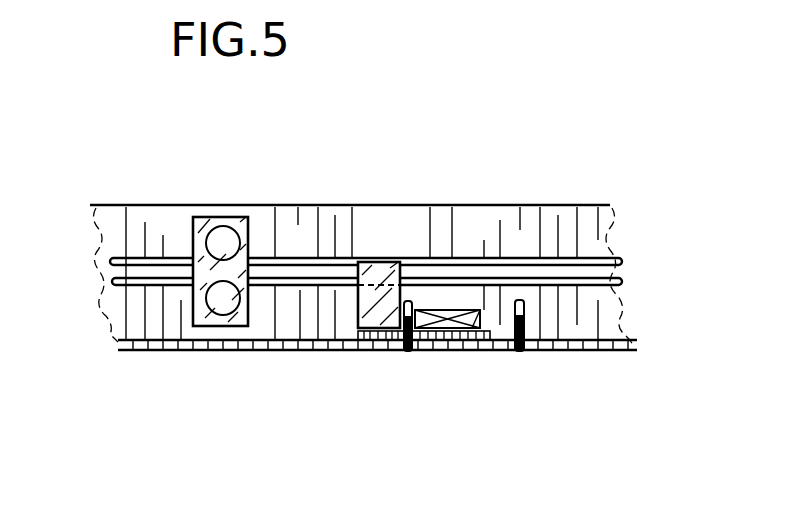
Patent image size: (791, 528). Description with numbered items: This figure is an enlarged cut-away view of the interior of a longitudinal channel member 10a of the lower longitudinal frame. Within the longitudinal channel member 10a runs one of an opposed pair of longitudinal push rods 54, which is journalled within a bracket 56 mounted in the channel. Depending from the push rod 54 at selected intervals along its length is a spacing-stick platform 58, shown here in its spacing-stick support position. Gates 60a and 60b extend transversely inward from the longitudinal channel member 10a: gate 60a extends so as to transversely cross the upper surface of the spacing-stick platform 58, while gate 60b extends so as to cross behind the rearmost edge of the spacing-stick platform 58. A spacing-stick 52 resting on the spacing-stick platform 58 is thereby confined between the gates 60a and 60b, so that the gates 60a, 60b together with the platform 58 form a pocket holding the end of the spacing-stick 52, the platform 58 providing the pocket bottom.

The longitudinal channel member 10a is at (532, 212).
The spacing-stick 52 is at (434, 340).
The longitudinal push rod 54 is at (318, 260).
The bracket 56 is at (197, 245).
The spacing-stick platform 58 is at (478, 342).
The gate 60a is at (394, 352).
The gate 60b is at (527, 318).